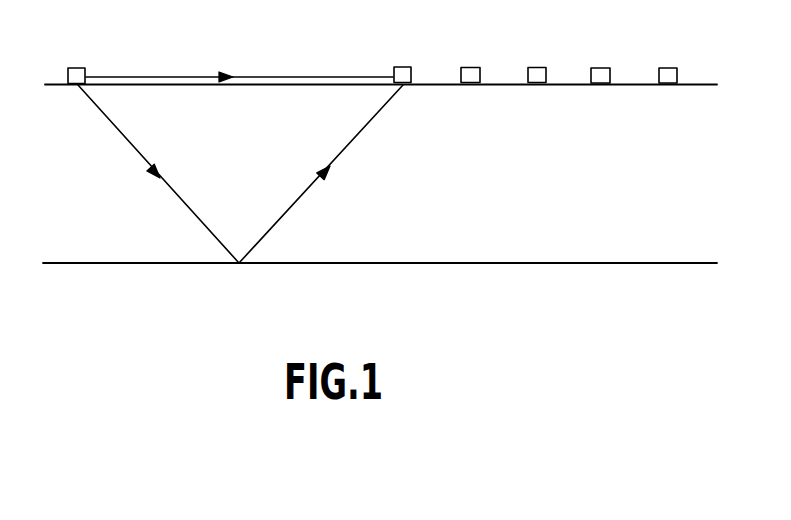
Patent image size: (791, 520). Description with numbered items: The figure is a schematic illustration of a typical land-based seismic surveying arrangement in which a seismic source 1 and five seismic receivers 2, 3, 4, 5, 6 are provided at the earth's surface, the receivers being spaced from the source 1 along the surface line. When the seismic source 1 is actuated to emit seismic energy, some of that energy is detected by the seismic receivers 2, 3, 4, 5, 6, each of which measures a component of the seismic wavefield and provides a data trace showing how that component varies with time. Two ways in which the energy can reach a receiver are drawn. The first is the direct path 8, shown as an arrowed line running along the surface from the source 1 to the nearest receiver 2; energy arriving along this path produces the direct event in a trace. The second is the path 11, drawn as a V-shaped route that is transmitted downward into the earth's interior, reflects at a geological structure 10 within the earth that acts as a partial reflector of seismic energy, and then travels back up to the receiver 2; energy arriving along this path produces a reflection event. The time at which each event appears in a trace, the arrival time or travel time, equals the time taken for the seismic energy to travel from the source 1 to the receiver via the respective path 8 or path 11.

The seismic source 1 is at (84, 67).
The seismic receiver 2 is at (409, 66).
The seismic receiver 3 is at (472, 66).
The seismic receiver 4 is at (538, 66).
The seismic receiver 5 is at (602, 67).
The seismic receiver 6 is at (670, 67).
The path 8 is at (188, 76).
The geological structure 10 is at (97, 262).
The path 11 is at (292, 210).